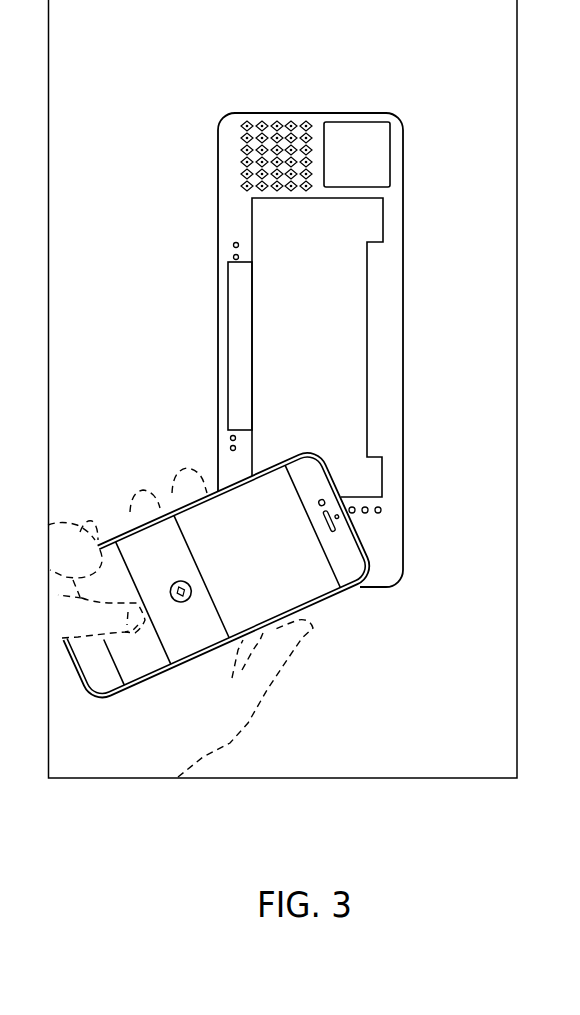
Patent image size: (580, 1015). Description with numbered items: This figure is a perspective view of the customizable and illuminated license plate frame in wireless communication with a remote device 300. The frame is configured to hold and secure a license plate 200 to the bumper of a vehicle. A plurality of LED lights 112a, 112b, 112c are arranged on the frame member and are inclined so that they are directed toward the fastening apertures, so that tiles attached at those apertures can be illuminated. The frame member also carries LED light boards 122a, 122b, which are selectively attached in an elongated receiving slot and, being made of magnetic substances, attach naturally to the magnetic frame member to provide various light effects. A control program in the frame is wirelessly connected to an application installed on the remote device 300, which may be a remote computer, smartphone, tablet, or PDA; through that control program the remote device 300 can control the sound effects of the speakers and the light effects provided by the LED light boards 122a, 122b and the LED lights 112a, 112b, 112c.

The license plate 200 is at (375, 230).
The LED light 112a is at (243, 172).
The LED light 112b is at (385, 509).
The LED light 112c is at (232, 245).
The LED light board 122a is at (382, 388).
The LED light board 122b is at (235, 368).
The remote device 300 is at (181, 582).